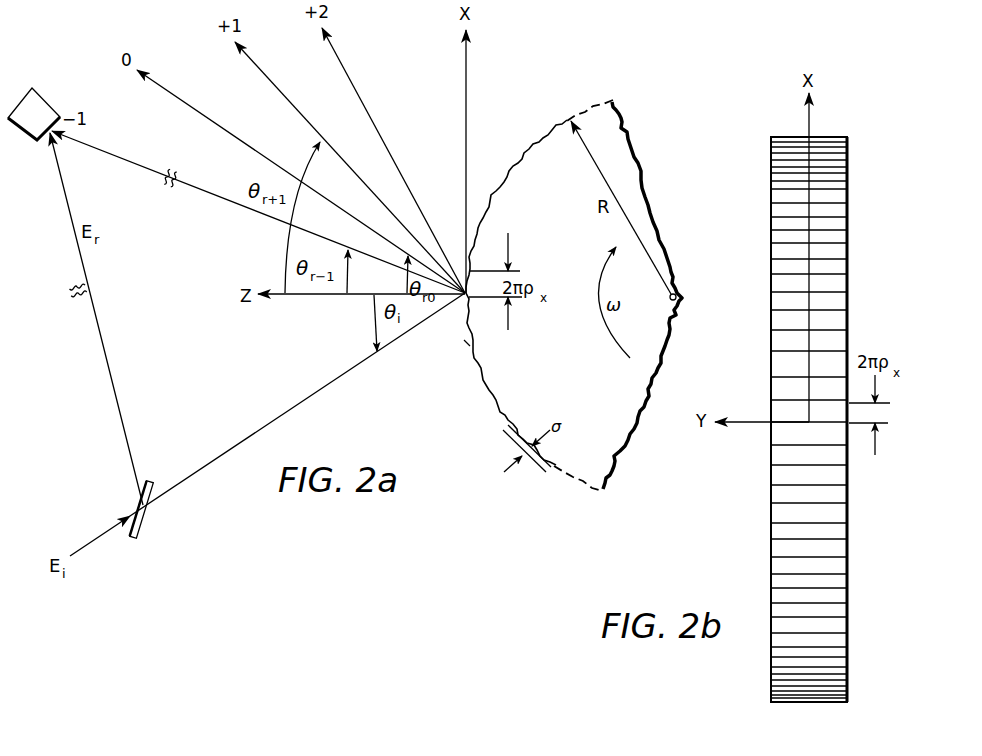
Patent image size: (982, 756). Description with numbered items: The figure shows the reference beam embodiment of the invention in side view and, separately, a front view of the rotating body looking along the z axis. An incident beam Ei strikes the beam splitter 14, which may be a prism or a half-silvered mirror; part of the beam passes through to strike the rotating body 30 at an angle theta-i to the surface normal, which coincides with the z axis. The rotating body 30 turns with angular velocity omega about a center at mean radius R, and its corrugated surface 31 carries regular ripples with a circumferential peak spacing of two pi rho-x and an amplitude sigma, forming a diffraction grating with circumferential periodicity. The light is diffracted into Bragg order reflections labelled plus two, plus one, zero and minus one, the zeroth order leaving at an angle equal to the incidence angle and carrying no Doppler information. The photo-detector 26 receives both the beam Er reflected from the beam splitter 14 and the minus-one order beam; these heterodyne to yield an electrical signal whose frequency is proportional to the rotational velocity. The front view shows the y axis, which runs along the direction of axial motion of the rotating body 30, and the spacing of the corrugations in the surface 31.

In FIG. 2a, the beam splitter 14 is at (152, 527).
In FIG. 2a, the photo-detector 26 is at (45, 92).
In FIG. 2a, the rotating body 30 is at (562, 199).
In FIG. 2b, the rotating body 30 is at (849, 243).
In FIG. 2a, the corrugated surface 31 is at (467, 343).